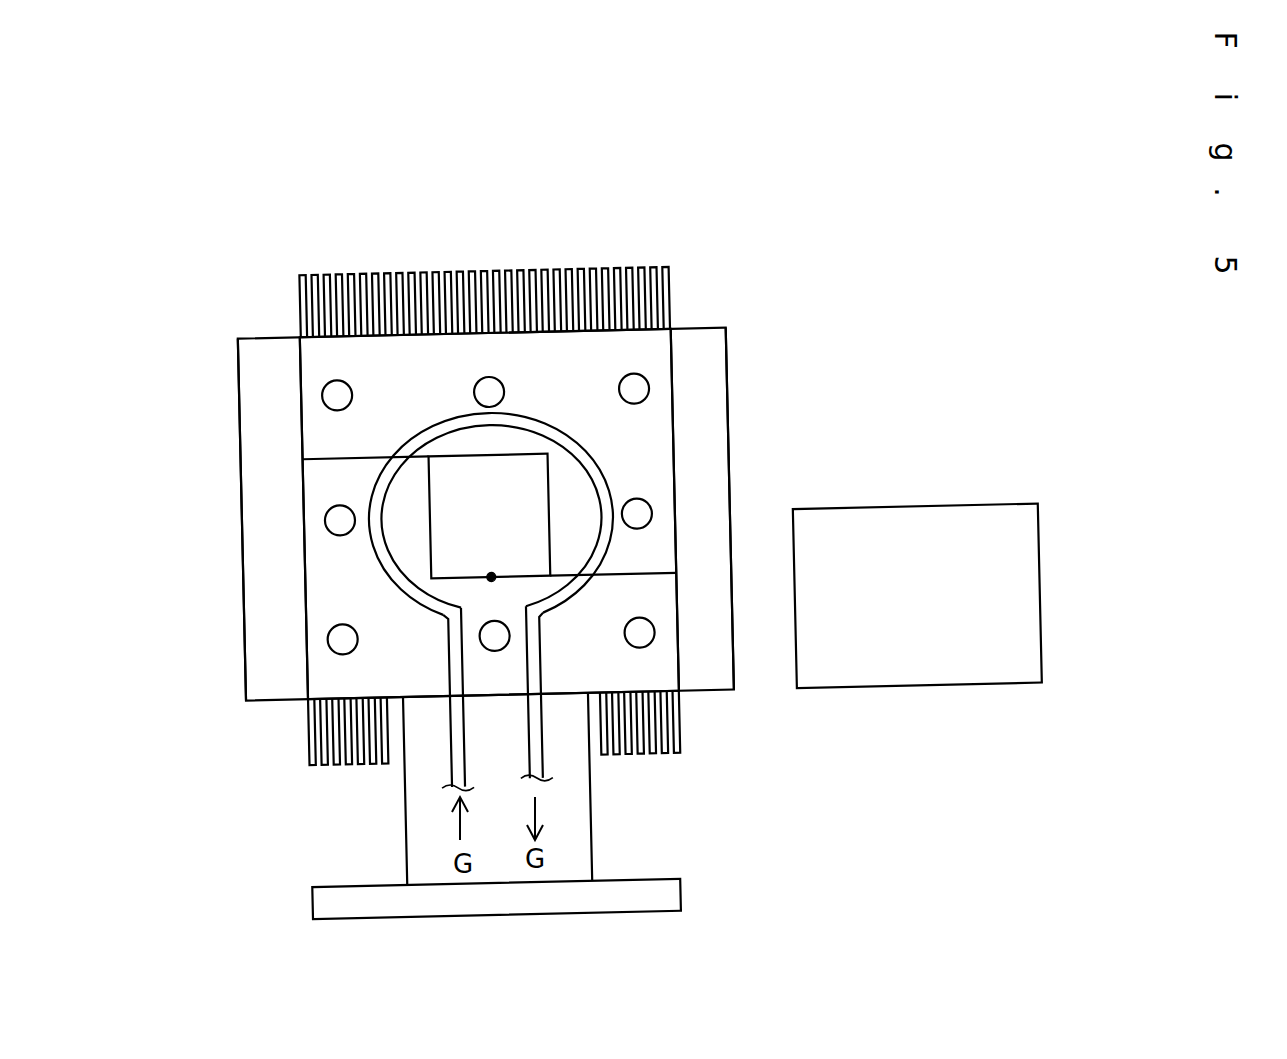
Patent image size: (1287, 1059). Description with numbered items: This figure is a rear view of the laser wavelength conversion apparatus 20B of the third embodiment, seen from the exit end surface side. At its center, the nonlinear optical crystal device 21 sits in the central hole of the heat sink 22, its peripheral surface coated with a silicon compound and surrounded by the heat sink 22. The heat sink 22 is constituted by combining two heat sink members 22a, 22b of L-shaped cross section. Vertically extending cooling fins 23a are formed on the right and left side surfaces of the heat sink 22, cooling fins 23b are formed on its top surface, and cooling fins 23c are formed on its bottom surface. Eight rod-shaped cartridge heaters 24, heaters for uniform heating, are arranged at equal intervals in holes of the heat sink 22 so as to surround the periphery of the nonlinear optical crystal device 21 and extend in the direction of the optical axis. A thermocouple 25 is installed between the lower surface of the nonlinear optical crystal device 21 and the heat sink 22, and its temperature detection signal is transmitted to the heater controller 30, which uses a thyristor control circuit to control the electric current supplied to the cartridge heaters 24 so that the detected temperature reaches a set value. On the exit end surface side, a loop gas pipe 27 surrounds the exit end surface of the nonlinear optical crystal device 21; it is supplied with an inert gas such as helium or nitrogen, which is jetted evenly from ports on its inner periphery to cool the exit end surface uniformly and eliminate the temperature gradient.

The laser wavelength conversion apparatus 20B is at (562, 238).
The nonlinear optical crystal device 21 is at (512, 495).
The heat sink 22 is at (616, 357).
The heat sink member 22a is at (653, 403).
The heat sink member 22b is at (347, 597).
The cooling fins 23a is at (277, 457).
The cooling fins 23b is at (678, 283).
The cooling fins 23c is at (613, 757).
The cartridge heaters 24 is at (633, 390).
The thermocouple 25 is at (490, 577).
The loop gas pipe 27 is at (410, 440).
The heater controller 30 is at (1040, 608).